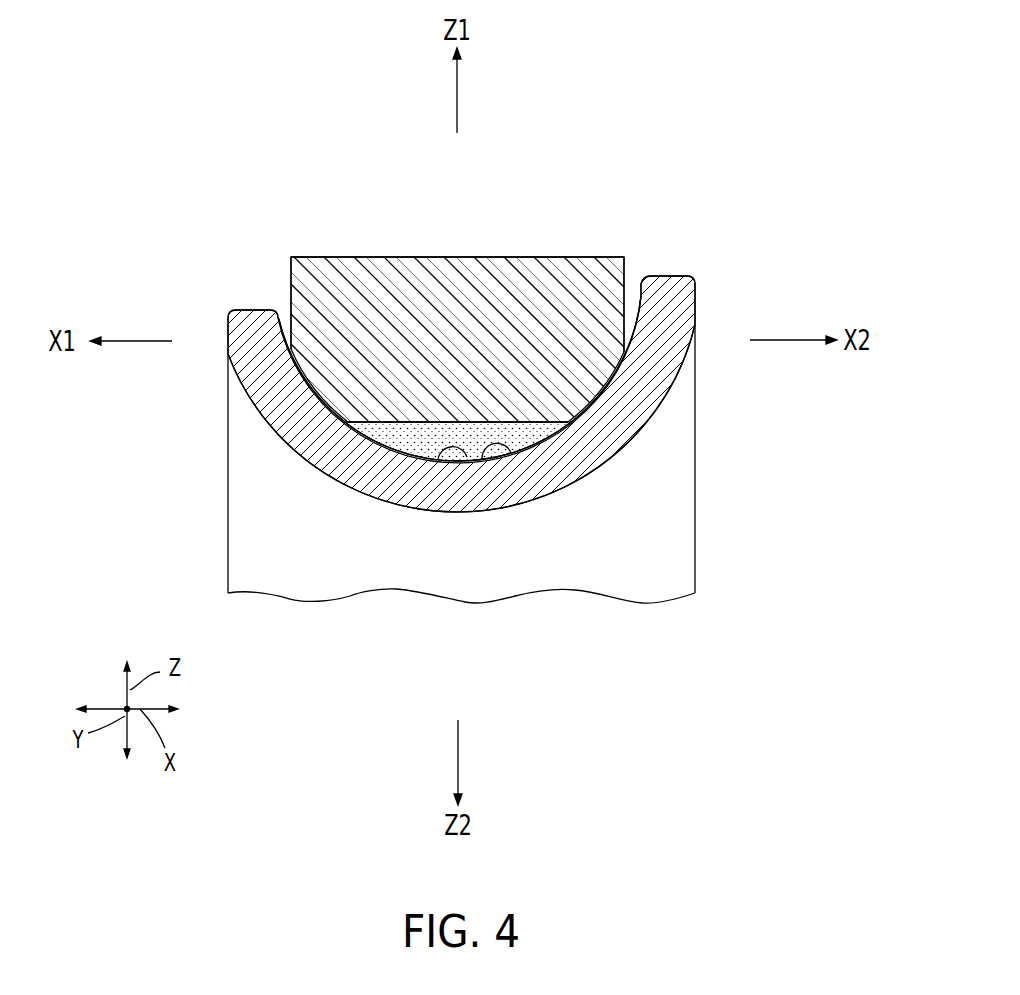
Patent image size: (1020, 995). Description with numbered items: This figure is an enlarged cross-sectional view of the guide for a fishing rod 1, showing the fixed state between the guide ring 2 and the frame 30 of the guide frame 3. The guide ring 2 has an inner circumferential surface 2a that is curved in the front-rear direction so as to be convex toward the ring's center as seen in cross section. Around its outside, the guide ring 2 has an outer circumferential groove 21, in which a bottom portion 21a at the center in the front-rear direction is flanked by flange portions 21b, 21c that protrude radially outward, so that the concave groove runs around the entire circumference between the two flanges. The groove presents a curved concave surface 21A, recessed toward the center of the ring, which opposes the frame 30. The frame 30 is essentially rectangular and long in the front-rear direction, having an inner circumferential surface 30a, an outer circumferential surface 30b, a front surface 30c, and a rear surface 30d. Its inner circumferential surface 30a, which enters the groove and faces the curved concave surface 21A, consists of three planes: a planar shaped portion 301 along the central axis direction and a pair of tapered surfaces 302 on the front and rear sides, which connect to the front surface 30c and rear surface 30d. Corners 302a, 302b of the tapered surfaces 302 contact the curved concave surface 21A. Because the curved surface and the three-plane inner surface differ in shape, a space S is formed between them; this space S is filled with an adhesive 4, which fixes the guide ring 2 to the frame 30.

The guide for a fishing rod 1 is at (294, 180).
The guide ring 2 is at (655, 410).
The inner circumferential surface 2a is at (371, 421).
The guide frame 3 is at (458, 403).
The adhesive 4 is at (532, 448).
The outer circumferential groove 21 is at (388, 428).
The bottom portion 21a is at (518, 455).
The curved concave surface 21A is at (448, 437).
The flange portion 21b is at (255, 307).
The flange portion 21c is at (667, 272).
The frame 30 is at (511, 257).
The inner circumferential surface 30a is at (420, 423).
The outer circumferential surface 30b is at (360, 257).
The front surface 30c is at (289, 290).
The rear surface 30d is at (627, 270).
The planar shaped portion 301 is at (390, 487).
The tapered surface 302 is at (305, 395).
The corner 302a is at (285, 362).
The corner 302b is at (310, 452).
The space S is at (542, 436).